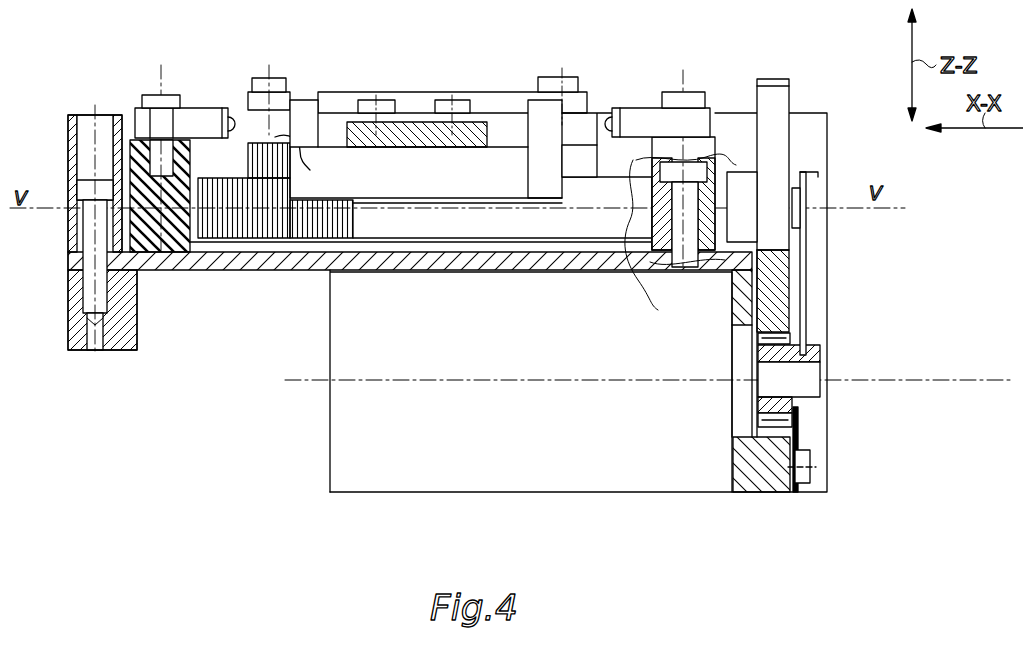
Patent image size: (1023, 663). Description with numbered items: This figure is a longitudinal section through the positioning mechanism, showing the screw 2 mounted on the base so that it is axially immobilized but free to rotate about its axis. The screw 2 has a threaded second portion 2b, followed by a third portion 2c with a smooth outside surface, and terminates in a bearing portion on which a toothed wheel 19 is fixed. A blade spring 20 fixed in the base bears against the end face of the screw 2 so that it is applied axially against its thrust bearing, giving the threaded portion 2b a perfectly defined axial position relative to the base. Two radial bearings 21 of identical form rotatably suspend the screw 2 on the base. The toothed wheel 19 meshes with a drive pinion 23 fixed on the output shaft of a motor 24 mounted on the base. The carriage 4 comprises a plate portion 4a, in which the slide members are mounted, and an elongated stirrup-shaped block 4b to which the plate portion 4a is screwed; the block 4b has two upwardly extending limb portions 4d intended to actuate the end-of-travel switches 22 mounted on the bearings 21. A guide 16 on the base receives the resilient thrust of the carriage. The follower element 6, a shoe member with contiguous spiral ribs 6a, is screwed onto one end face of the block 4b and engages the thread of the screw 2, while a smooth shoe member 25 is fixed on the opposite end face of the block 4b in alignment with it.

The screw 2 is at (393, 243).
The second portion of the screw 2b is at (268, 218).
The third portion of the screw 2c is at (583, 222).
The carriage 4 is at (442, 176).
The plate portion 4a is at (420, 137).
The block 4b is at (503, 172).
The limb portions 4d is at (543, 113).
The follower element 6 is at (260, 143).
The contiguous ribs 6a is at (307, 160).
The guide 16 is at (342, 108).
The toothed wheel 19 is at (778, 98).
The blade spring 20 is at (808, 262).
The radial bearings 21 is at (657, 258).
The end-of-travel switches 22 is at (635, 122).
The drive pinion 23 is at (820, 362).
The motor 24 is at (672, 478).
The smooth shoe member 25 is at (588, 148).